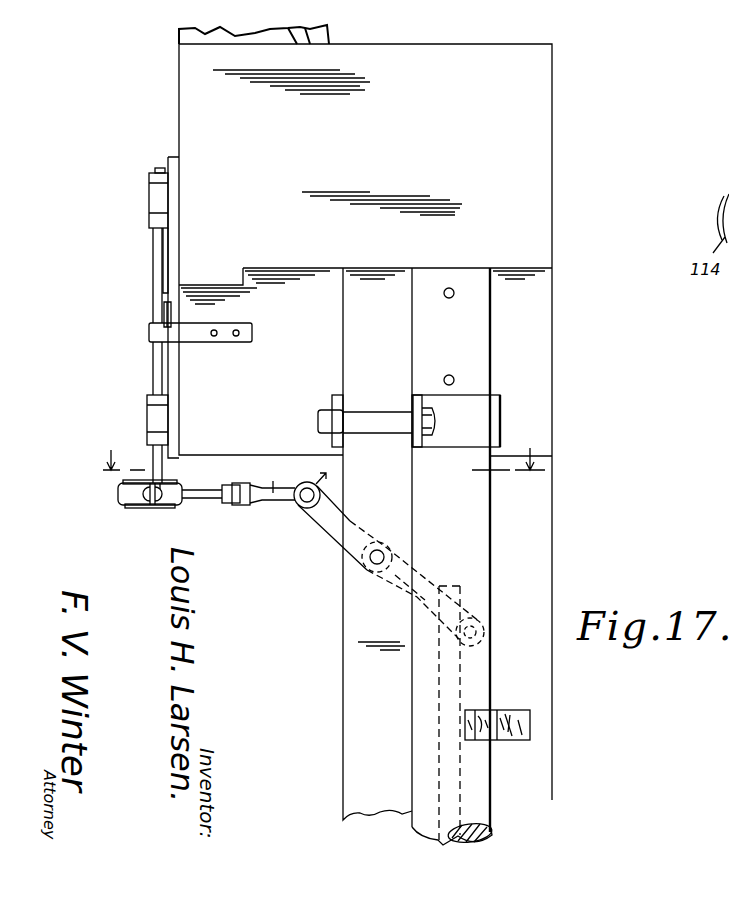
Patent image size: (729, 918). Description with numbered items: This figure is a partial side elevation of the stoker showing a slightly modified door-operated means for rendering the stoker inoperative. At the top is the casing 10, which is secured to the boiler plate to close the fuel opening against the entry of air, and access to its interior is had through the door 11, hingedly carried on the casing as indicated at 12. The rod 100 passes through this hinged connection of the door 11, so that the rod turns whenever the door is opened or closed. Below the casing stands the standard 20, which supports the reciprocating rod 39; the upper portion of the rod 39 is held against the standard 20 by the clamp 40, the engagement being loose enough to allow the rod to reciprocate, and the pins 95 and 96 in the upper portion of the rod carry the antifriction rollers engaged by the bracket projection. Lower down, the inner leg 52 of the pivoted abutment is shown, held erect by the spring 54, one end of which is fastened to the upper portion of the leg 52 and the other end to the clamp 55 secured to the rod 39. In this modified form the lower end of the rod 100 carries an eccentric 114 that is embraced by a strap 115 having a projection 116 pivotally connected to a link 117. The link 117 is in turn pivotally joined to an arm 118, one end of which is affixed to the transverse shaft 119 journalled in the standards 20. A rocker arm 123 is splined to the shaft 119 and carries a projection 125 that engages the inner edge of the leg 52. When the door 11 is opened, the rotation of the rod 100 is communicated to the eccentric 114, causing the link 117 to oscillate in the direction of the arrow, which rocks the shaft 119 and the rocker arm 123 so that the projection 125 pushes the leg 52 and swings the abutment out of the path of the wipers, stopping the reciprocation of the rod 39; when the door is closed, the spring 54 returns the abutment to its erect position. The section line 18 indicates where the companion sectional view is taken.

The casing 10 is at (541, 128).
The door 11 is at (172, 255).
The hinge connection 12 is at (148, 194).
The rod 100 is at (155, 362).
The section line 18- 18 is at (323, 450).
The standard 20 is at (338, 685).
The rod 39 is at (480, 550).
The clamp 40 is at (497, 440).
The pin 95 is at (449, 298).
The pin 96 is at (452, 375).
The eccentric 114 is at (175, 483).
The strap 115 is at (150, 500).
The projection 116 is at (208, 498).
The link 117 is at (258, 483).
The arm 118 is at (322, 525).
The transverse shaft 119 is at (374, 578).
The rocker arm 123 is at (432, 560).
The projection 125 is at (478, 620).
The inner leg 52 is at (437, 727).
The spring 54 is at (508, 722).
The clamp 55 is at (530, 724).